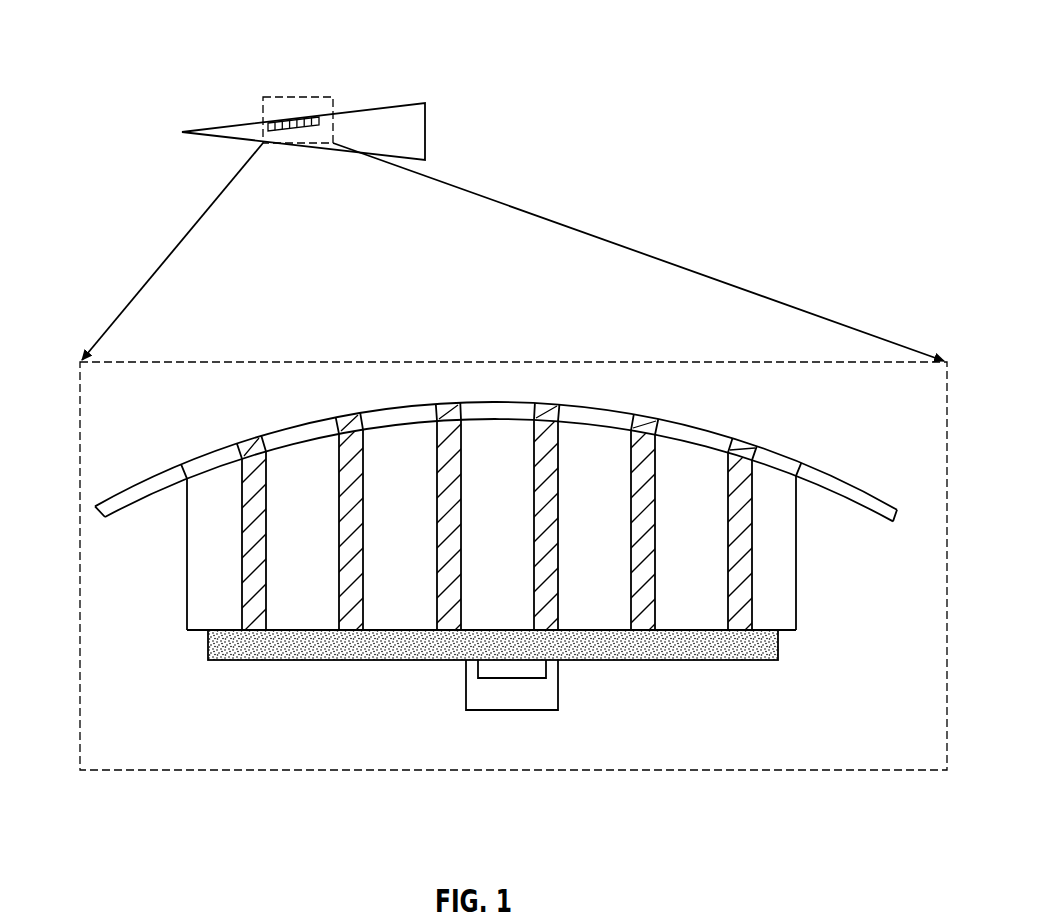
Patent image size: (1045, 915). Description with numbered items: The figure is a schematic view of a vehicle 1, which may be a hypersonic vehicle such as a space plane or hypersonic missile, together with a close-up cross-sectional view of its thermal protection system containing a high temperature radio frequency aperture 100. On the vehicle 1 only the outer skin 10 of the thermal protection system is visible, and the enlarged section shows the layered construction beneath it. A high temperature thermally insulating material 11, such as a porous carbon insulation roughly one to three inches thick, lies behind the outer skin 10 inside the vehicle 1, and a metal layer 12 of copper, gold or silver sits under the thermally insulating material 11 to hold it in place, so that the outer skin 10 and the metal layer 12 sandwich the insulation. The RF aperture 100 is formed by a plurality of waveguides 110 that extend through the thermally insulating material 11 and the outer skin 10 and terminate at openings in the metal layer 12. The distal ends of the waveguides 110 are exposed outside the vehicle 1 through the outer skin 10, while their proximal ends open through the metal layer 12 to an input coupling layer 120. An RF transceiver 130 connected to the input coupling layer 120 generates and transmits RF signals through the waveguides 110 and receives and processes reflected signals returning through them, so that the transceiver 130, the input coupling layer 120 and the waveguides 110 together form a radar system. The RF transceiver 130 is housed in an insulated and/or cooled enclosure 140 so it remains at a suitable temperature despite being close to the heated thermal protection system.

The vehicle 1 is at (428, 98).
The outer skin 10 is at (373, 117).
The high temperature radio frequency (RF) aperture 100 is at (299, 94).
The thermally insulating material 11 is at (785, 592).
The metal layer 12 is at (787, 632).
The waveguides 110 is at (254, 620).
The input coupling layer 120 is at (780, 656).
The RF transceiver 130 is at (484, 681).
The enclosure 140 is at (540, 712).